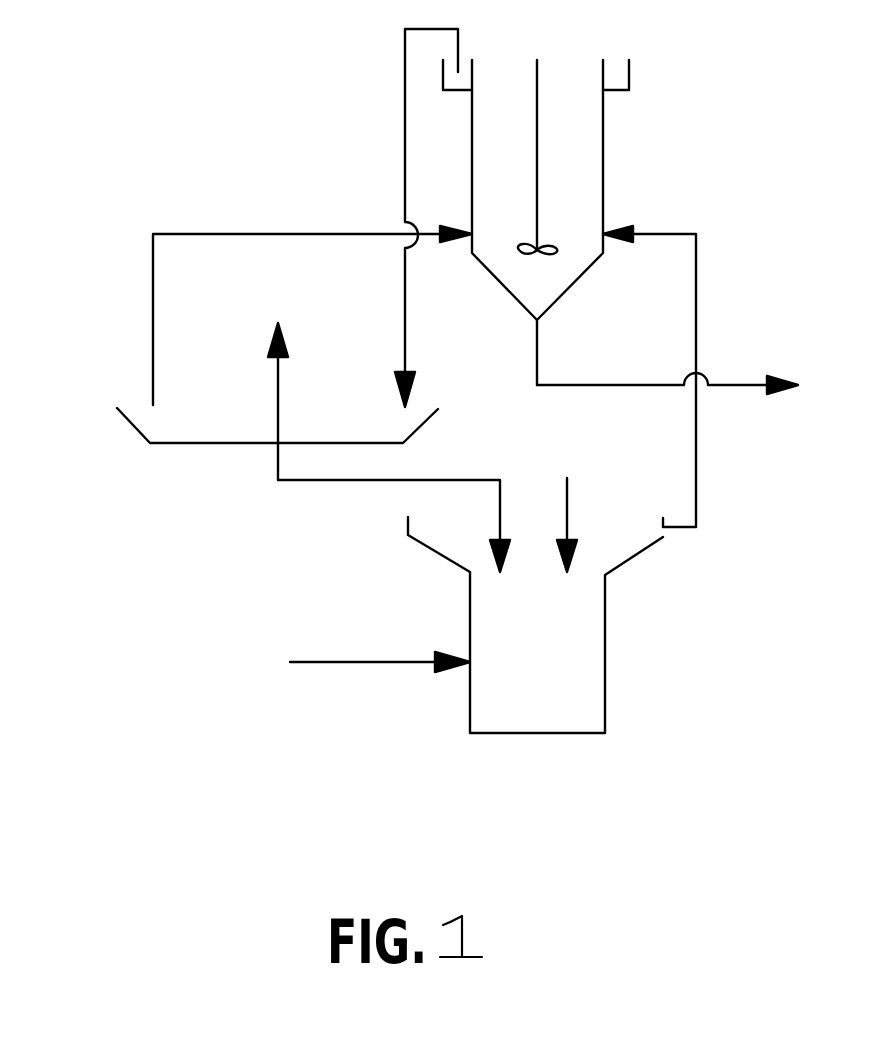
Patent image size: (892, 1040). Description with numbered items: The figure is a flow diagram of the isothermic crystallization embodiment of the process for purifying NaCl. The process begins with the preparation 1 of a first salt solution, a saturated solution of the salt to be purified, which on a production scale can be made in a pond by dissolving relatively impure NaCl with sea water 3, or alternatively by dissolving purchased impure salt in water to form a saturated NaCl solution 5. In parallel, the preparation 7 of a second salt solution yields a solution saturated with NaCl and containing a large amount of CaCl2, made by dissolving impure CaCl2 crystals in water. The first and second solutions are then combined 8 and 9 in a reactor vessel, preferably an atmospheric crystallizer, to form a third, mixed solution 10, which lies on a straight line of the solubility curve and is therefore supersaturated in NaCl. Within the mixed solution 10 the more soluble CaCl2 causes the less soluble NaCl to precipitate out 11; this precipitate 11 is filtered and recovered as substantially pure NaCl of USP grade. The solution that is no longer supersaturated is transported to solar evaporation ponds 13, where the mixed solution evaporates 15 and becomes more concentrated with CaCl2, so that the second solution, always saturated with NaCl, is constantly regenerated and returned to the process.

The preparation of first salt solution 1 is at (585, 700).
The sea water 3 is at (312, 650).
The saturated NaCl solution 5 is at (585, 505).
The preparation of second salt solution 7 is at (170, 446).
The combining of first solution 8 is at (150, 299).
The combining of second solution 9 is at (700, 458).
The mixed solution 10 is at (548, 88).
The precipitate 11 is at (738, 373).
The solar evaporation ponds 13 is at (400, 112).
The evaporation 15 is at (270, 374).